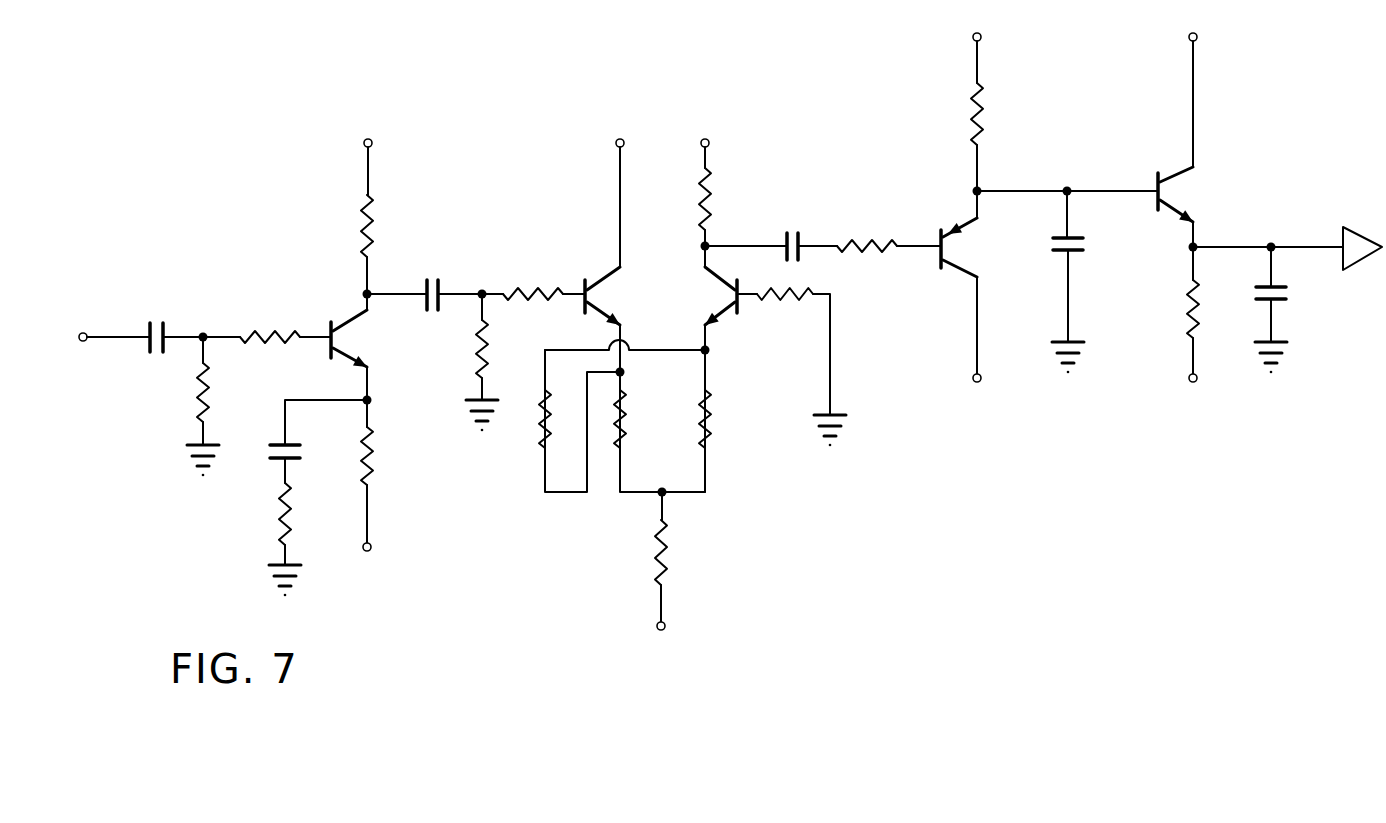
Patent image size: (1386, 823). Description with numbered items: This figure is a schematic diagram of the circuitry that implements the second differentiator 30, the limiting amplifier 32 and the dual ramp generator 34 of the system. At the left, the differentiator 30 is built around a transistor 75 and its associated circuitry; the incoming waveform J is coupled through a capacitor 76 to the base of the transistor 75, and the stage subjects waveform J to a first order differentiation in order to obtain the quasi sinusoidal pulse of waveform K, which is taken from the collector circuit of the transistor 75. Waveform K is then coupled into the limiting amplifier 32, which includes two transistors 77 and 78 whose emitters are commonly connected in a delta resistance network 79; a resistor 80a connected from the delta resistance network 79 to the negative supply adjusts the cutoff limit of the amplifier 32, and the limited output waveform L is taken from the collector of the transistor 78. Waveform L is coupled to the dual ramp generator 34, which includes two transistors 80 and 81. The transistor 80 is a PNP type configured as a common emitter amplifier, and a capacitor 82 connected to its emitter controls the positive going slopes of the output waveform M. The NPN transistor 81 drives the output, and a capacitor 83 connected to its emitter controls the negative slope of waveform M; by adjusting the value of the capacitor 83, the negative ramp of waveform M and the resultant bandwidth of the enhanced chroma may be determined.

The second differentiator 30 is at (220, 527).
The limiting amplifier 32 is at (584, 615).
The dual ramp generator 34 is at (1062, 505).
The transistor 75 is at (340, 340).
The coupling capacitor 76 is at (163, 350).
The transistor 77 is at (590, 298).
The transistor 78 is at (735, 298).
The delta resistance network 79 is at (700, 412).
The transistor 80 is at (950, 250).
The resistor 80a is at (665, 563).
The NPN transistor 81 is at (1165, 193).
The capacitor 82 is at (1080, 254).
The capacitor 83 is at (1283, 288).